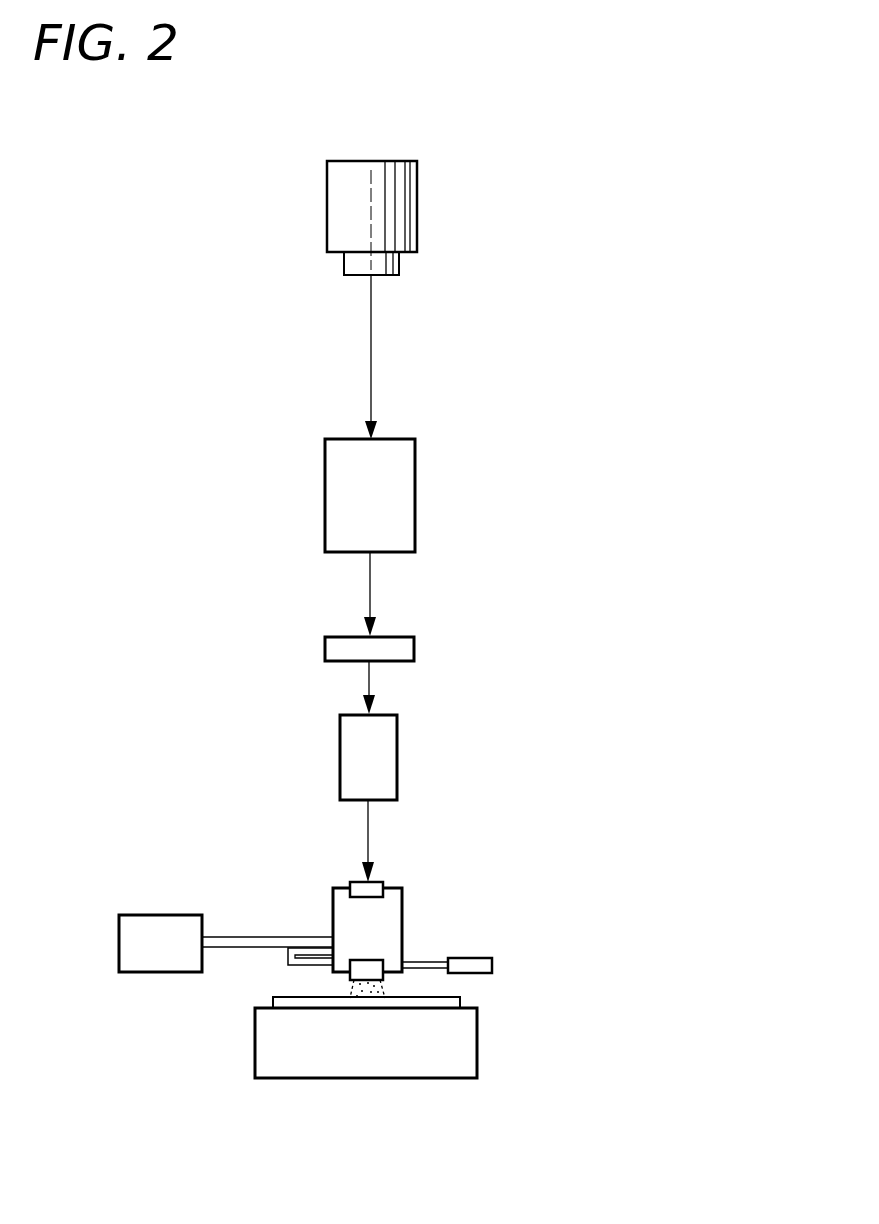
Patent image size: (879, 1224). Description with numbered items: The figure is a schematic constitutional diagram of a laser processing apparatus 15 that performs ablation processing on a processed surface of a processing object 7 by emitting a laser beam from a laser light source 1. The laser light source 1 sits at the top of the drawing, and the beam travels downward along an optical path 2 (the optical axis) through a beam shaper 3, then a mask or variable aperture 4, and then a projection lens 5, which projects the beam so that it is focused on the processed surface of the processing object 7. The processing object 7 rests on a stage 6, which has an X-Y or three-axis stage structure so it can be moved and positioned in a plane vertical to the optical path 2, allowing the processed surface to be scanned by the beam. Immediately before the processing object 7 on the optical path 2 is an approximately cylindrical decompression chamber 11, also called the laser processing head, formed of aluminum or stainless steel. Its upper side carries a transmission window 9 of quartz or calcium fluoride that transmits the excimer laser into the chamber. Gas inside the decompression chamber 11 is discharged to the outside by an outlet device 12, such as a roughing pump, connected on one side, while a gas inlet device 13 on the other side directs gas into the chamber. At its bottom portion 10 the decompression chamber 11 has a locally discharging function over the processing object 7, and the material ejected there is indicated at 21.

The laser light source 1 is at (417, 202).
The optical path 2 is at (371, 322).
The beam shaper 3 is at (415, 492).
The mask or variable aperture 4 is at (414, 652).
The projection lens 5 is at (397, 740).
The stage 6 is at (455, 1050).
The processing object 7 is at (460, 1003).
The upper side transmission window 9 is at (355, 882).
The bottom portion 10 is at (355, 980).
The decompression chamber 11 is at (402, 897).
The outlet device 12 is at (155, 915).
The gas inlet device 13 is at (492, 965).
The laser processing apparatus 15 is at (607, 567).
The ejected gas 21 is at (367, 993).